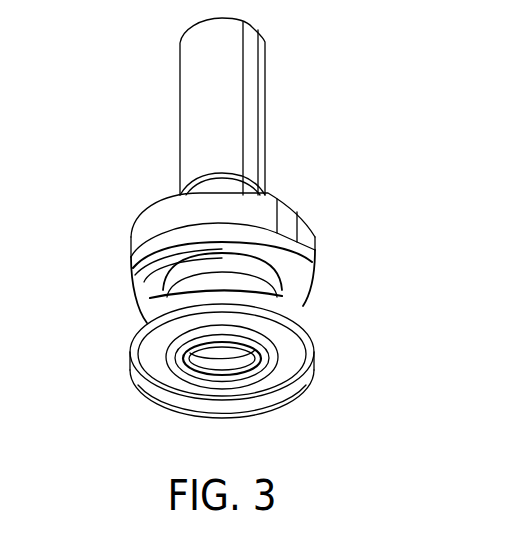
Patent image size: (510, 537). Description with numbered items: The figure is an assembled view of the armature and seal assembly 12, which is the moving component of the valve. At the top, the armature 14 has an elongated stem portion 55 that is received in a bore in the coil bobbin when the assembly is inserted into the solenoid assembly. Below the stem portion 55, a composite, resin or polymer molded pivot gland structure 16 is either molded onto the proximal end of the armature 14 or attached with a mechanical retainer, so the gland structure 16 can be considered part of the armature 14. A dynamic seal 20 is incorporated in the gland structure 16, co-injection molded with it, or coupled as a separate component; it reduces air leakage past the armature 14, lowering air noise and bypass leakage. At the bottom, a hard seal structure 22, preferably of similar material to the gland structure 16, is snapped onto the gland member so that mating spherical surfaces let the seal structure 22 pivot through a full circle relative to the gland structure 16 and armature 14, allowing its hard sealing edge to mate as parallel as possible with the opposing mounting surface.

The armature and seal assembly 12 is at (298, 164).
The armature 14 is at (168, 212).
The pivot gland structure 16 is at (157, 296).
The dynamic seal 20 is at (310, 262).
The hard seal structure 22 is at (131, 344).
The stem portion 55 is at (193, 98).